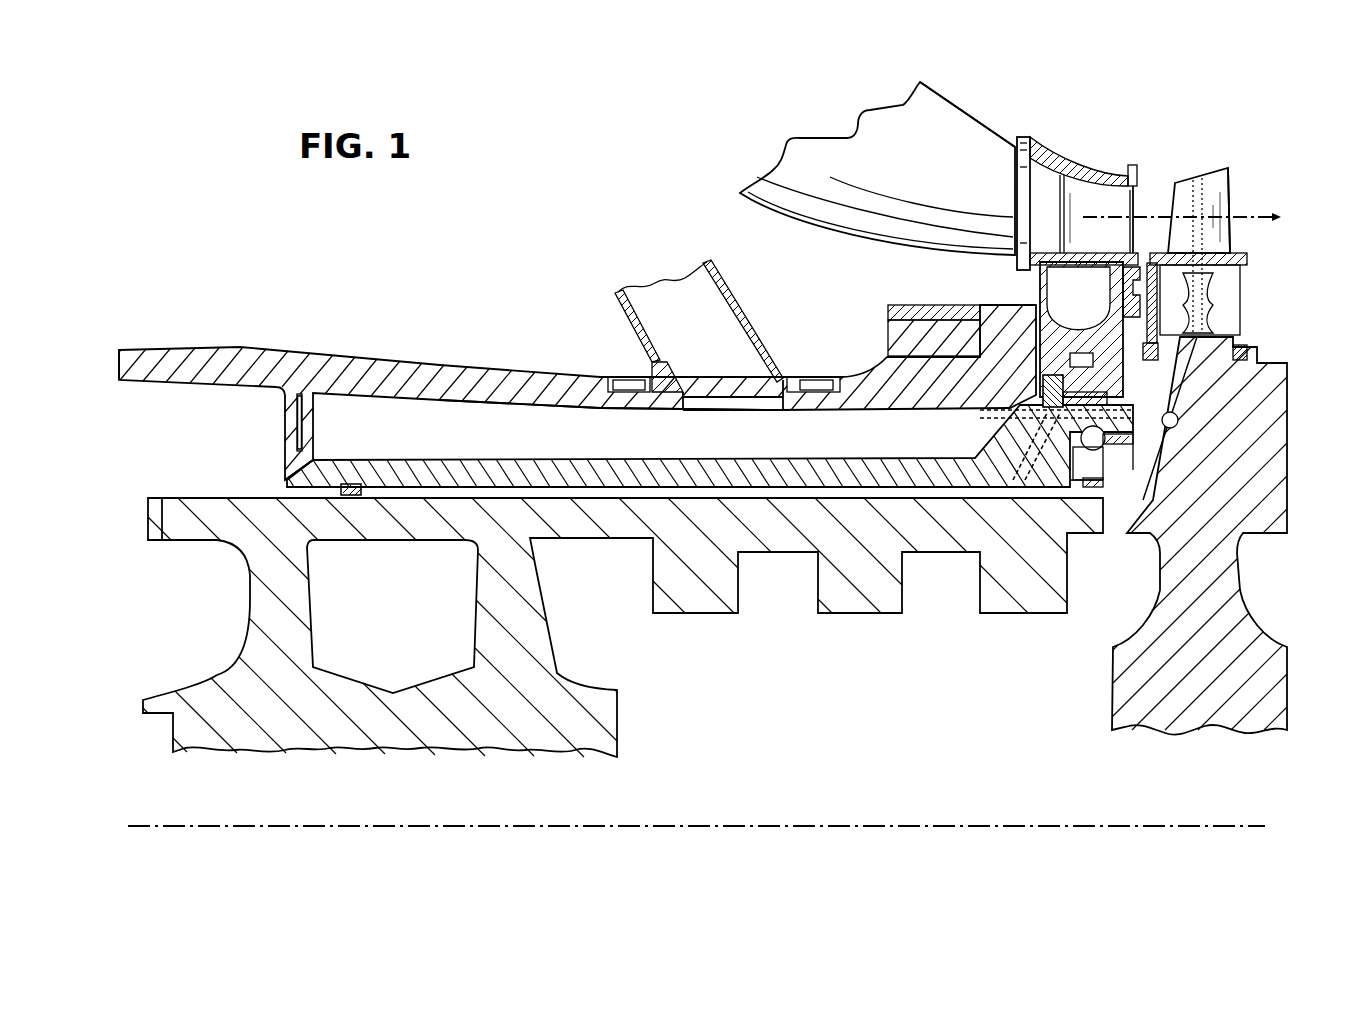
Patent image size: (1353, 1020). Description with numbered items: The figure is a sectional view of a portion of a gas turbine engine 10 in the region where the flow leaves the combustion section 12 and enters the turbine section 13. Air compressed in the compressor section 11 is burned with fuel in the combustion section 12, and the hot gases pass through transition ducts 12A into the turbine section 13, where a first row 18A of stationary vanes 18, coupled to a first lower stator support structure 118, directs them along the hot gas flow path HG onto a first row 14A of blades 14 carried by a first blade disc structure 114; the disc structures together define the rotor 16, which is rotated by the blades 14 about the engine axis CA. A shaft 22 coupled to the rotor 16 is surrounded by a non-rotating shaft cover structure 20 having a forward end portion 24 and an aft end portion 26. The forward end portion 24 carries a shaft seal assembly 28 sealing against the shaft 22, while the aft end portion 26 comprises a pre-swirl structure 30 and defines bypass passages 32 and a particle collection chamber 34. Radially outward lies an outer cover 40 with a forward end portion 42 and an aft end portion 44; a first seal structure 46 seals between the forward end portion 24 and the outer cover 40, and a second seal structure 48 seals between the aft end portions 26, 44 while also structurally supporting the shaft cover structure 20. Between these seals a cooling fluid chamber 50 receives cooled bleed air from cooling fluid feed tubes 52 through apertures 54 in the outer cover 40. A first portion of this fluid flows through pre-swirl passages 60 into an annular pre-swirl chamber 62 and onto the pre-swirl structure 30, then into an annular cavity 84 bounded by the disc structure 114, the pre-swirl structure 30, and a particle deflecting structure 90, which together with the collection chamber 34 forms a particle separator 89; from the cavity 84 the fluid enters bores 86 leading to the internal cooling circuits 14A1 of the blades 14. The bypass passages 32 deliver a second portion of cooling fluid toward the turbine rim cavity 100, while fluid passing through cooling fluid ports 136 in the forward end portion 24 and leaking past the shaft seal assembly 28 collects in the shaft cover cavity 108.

The gas turbine engine 10 is at (1020, 50).
The compressor section 11 is at (136, 349).
The combustion section 12 is at (997, 115).
The transition ducts 12A is at (945, 90).
The turbine section 13 is at (1253, 118).
The blades 14 is at (1244, 168).
The first row of blades 14A is at (1237, 194).
The internal cooling circuits 14A1 is at (1230, 244).
The rotor 16 is at (1265, 627).
The vanes 18 is at (1049, 195).
The first row of vanes 18A is at (1139, 203).
The shaft cover structure 20 is at (395, 453).
The shaft 22 is at (253, 496).
The forward end portion 24 is at (296, 446).
The aft end portion 26 is at (1135, 405).
The shaft seal assembly 28 is at (353, 499).
The pre-swirl structure 30 is at (1070, 462).
The bypass passages 32 is at (1018, 412).
The particle collection chamber 34 is at (1095, 444).
The outer cover 40 is at (502, 363).
The forward end portion 42 is at (117, 367).
The aft end portion 44 is at (1118, 370).
The first seal structure 46 is at (313, 423).
The second seal structure 48 is at (1050, 370).
The cooling fluid chamber 50 is at (575, 423).
The cooling fluid feed tubes 52 is at (740, 314).
The apertures 54 is at (783, 399).
The pre-swirl passages 60 is at (1033, 470).
The pre-swirl chamber 62 is at (1052, 460).
The annular cavity 84 is at (1143, 467).
The bores 86 is at (1152, 428).
The particle separator 89 is at (1115, 462).
The particle deflecting structure 90 is at (1132, 470).
The turbine rim cavity 100 is at (1125, 385).
The shaft cover cavity 108 is at (560, 499).
The first blade disc structure 114 is at (1247, 432).
The first lower stator support structure 118 is at (1005, 301).
The cooling fluid ports 136 is at (282, 477).
The hot gas flow path HG is at (1257, 212).
The engine central axis CA is at (457, 825).